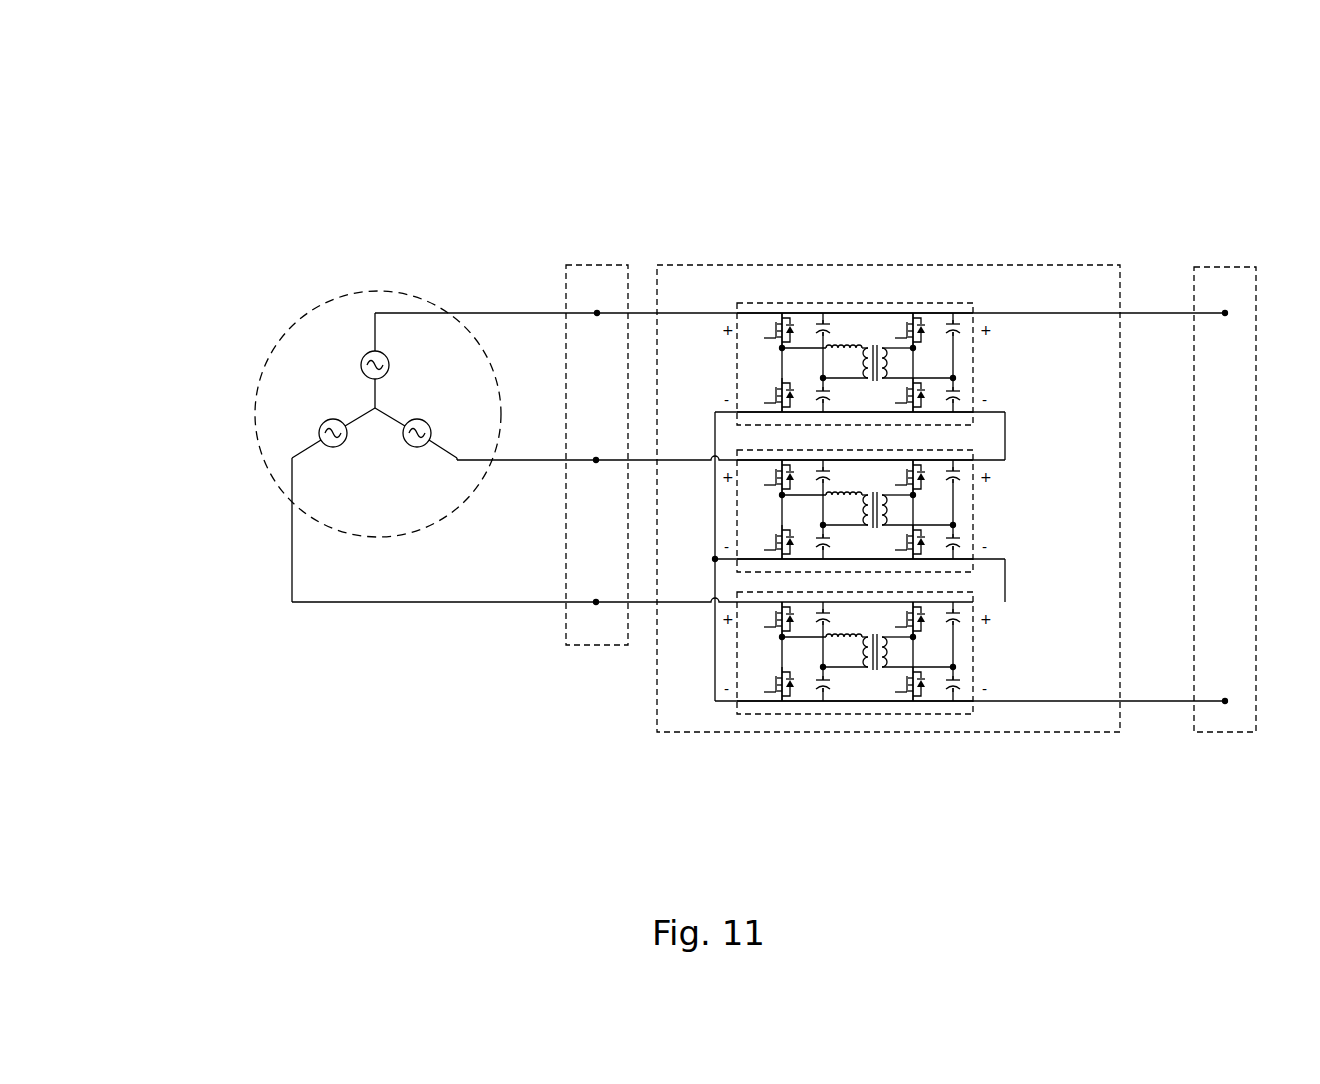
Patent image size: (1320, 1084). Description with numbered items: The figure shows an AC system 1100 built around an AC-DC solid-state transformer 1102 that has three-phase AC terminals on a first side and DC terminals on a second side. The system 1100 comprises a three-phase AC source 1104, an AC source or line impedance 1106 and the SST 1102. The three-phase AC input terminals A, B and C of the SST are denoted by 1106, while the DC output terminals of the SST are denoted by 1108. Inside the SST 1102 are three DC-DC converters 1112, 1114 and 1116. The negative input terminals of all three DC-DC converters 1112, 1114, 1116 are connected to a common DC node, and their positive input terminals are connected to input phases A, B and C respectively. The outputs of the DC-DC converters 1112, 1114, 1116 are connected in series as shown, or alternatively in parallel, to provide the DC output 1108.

The system 1100 is at (334, 129).
The AC-DC solid-state transformer (SST) 1102 is at (804, 263).
The three-phase AC source 1104 is at (263, 351).
The three-phase AC input terminals 1106 is at (588, 260).
The DC output terminals 1108 is at (1228, 256).
The first DC-DC converter 1112 is at (980, 370).
The second DC-DC converter 1114 is at (980, 497).
The third DC-DC converter 1116 is at (980, 650).